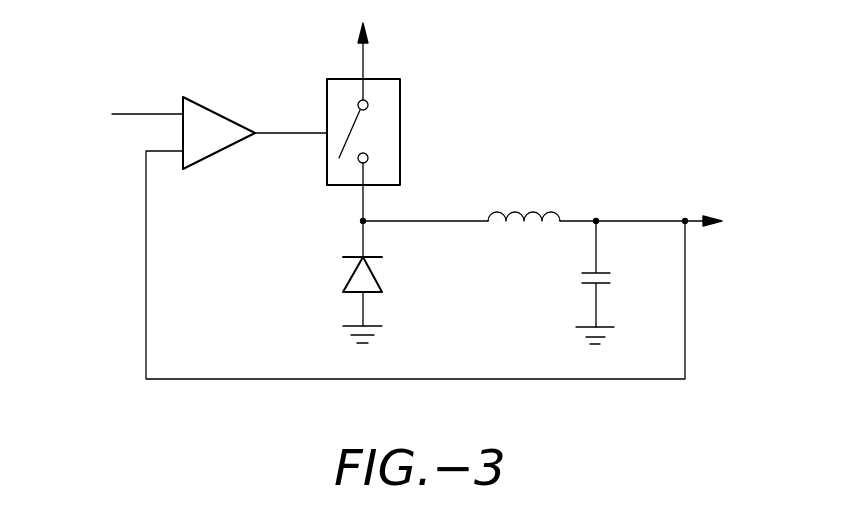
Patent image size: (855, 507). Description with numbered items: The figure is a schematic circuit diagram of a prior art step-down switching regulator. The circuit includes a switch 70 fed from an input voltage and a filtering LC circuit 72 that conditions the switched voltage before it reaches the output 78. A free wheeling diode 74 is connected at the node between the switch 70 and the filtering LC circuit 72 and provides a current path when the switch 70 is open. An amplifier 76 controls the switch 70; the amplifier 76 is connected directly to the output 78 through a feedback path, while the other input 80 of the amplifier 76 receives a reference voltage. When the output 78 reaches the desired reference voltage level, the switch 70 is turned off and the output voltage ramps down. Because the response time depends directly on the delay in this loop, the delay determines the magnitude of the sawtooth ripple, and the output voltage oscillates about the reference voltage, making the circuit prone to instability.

The switch 70 is at (416, 97).
The filtering LC circuit 72 is at (531, 194).
The free wheeling diode 74 is at (386, 278).
The amplifier 76 is at (224, 164).
The output 78 is at (751, 194).
The other input 80 is at (146, 92).